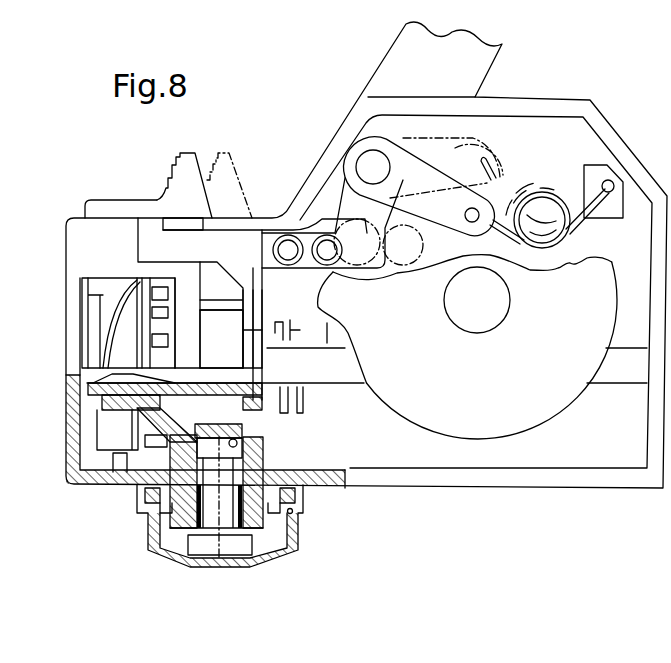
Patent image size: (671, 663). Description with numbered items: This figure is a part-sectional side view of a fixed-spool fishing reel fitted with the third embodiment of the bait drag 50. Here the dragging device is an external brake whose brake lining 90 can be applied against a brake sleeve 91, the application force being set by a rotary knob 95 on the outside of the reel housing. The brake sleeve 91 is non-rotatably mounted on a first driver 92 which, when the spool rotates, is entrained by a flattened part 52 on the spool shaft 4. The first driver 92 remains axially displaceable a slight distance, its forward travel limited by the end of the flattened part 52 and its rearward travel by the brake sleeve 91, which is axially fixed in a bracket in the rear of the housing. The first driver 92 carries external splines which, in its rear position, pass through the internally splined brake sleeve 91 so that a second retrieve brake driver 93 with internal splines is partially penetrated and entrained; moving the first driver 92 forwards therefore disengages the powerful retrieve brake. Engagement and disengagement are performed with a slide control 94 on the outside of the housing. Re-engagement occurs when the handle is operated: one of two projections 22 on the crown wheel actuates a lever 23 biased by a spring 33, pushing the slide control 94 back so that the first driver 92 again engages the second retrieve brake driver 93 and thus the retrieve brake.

The spool shaft 4 is at (617, 375).
The projections 22 is at (336, 300).
The lever 23 is at (424, 178).
The spring 33 is at (543, 196).
The bait drag 50 is at (247, 419).
The flattened part 52 is at (86, 376).
The brake lining 90 is at (245, 440).
The brake sleeve 91 is at (234, 350).
The first driver 92 is at (250, 333).
The second retrieve brake driver 93 is at (185, 290).
The slide control 94 is at (201, 157).
The rotary knob 95 is at (216, 570).